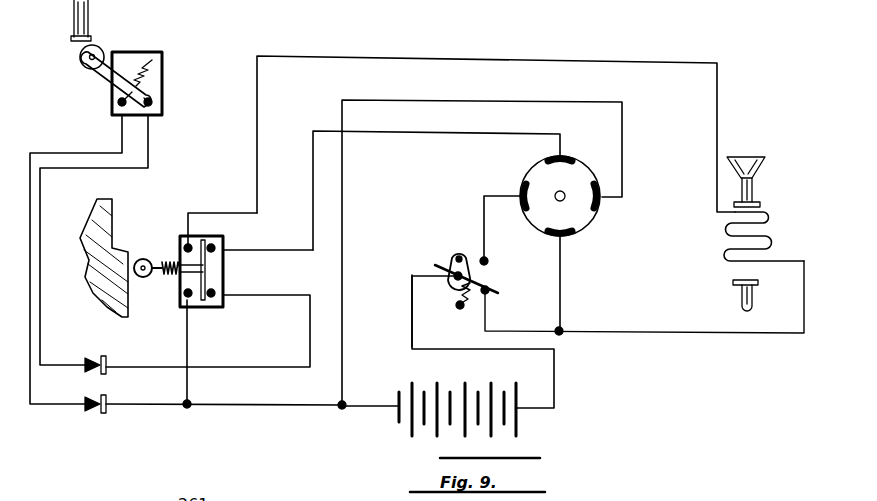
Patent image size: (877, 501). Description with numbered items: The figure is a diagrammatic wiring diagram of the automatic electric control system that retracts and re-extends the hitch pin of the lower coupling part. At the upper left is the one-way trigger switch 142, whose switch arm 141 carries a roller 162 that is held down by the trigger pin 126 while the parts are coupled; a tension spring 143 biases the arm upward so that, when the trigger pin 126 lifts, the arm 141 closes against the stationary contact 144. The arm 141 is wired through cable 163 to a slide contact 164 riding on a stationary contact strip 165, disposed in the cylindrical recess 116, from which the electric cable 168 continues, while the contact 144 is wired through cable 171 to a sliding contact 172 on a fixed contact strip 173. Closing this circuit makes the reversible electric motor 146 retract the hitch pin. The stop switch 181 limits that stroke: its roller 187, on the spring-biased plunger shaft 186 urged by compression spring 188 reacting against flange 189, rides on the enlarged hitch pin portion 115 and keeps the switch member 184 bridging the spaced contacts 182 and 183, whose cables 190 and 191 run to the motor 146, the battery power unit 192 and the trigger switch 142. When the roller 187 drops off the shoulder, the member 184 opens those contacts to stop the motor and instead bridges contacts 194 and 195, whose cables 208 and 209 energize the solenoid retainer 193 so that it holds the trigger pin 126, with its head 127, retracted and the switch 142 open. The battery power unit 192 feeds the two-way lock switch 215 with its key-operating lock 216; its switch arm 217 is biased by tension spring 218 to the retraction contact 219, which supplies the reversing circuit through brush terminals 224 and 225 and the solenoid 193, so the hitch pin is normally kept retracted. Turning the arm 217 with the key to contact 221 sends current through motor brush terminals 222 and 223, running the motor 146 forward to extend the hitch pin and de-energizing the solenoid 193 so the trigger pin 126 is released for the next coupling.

The trigger pin 126 is at (75, 22).
The roller 162 is at (79, 62).
The switch arm 141 is at (102, 74).
The one-way switch 142 is at (166, 68).
The tension spring 143 is at (148, 62).
The stationary contact 144 is at (212, 92).
The cable 163 is at (53, 156).
The cable 171 is at (84, 170).
The enlarged portion of the hitch pin 115 is at (92, 290).
The cylindrical-shaped recess 116 is at (110, 226).
The compression spring 188 is at (152, 258).
The flange 189 is at (162, 264).
The roller 187 is at (134, 280).
The stop switch 181 is at (205, 236).
The switch member 184 is at (224, 264).
The contact 194 is at (188, 244).
The contact 182 is at (215, 247).
The contact 183 is at (213, 300).
The spring-biased plunger shaft 186 is at (192, 272).
The contact 195 is at (187, 298).
The cable 190 is at (312, 205).
The cable 191 is at (309, 336).
The cable 209 is at (189, 350).
The electric cable 168 is at (170, 409).
The sliding contact 172 is at (86, 372).
The fixed contact strip 173 is at (106, 372).
The slide contact 164 is at (92, 412).
The stationary contact strip 165 is at (106, 412).
The cable 208 is at (530, 57).
The two-way lock switch 215 is at (455, 248).
The key-operating lock 216 is at (454, 274).
The switch arm 217 is at (490, 286).
The tension spring 218 is at (458, 304).
The retraction contact 219 is at (487, 293).
The contact 221 is at (488, 261).
The battery power unit 192 is at (448, 392).
The electric motor 146 is at (594, 232).
The motor brush terminal 222 is at (516, 186).
The motor brush terminal 223 is at (598, 178).
The brush terminal 224 is at (562, 152).
The brush terminal 225 is at (572, 236).
The head of the trigger pin 127 is at (752, 164).
The solenoid retainer 193 is at (766, 240).